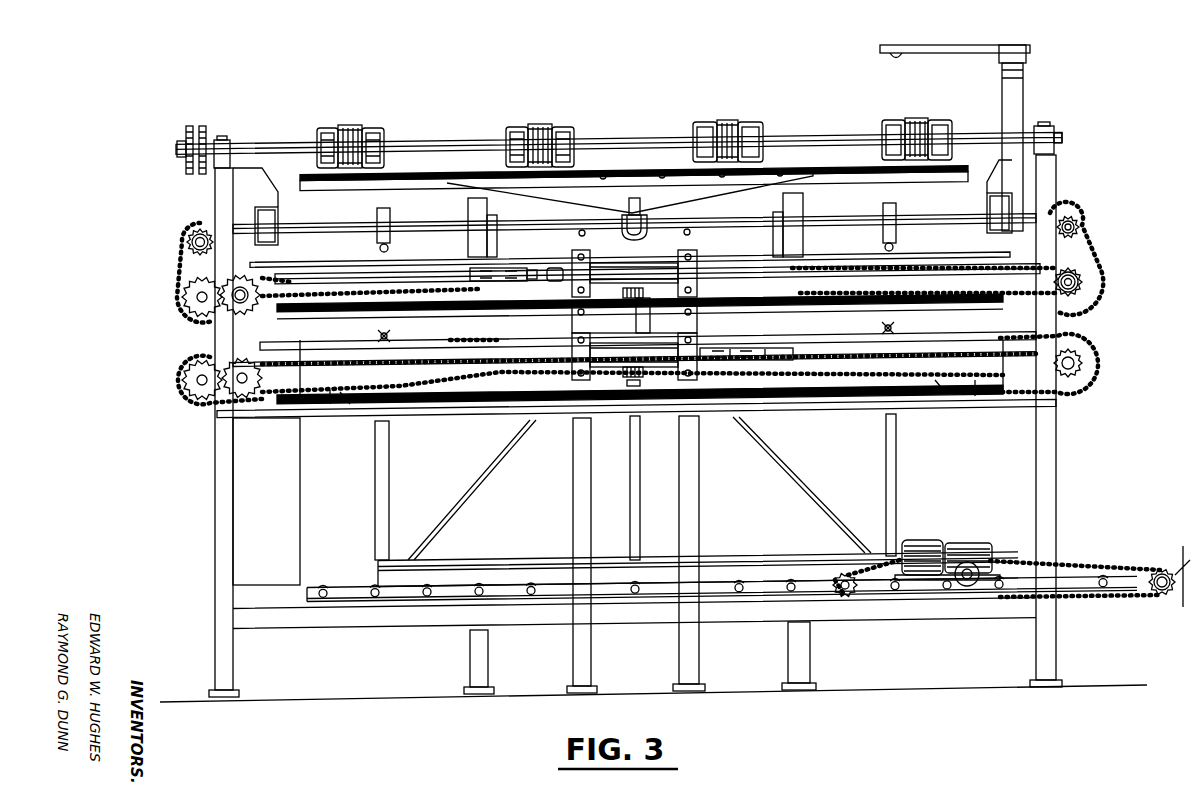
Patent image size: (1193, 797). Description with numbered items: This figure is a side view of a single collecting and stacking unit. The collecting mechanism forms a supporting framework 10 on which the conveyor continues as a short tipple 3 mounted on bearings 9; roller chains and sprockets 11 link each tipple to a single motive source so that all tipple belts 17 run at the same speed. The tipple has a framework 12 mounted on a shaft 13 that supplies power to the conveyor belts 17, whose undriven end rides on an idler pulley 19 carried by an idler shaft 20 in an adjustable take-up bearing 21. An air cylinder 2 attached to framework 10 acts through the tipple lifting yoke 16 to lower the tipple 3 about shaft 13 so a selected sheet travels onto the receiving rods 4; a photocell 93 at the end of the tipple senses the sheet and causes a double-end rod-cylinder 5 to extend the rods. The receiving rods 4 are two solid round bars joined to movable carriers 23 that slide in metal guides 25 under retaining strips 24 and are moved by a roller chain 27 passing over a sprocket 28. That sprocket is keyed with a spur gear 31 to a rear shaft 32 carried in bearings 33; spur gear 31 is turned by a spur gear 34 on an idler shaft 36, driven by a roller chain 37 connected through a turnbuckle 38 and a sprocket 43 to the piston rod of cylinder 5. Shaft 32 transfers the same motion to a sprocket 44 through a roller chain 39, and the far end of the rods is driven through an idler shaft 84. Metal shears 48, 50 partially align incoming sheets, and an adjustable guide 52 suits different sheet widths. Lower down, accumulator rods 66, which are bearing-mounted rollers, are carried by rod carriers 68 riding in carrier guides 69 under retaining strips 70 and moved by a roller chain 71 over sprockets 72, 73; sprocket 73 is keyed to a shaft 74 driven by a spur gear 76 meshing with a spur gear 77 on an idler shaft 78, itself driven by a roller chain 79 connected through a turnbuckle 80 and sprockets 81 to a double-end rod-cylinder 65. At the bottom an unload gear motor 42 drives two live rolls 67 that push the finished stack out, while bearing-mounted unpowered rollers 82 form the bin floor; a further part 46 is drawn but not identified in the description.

The air cylinder 2 is at (627, 336).
The tipple 3 is at (642, 136).
The receiving rods 4 is at (386, 245).
The double-end rod-cylinder 5 is at (644, 272).
The bearings 9 is at (223, 140).
The framework 10 is at (1051, 519).
The roller chains and sprockets 11 is at (203, 126).
The tipple framework 12 is at (367, 131).
The shaft 13 is at (1028, 130).
The tipple lifting yoke 16 is at (643, 193).
The conveyor belts 17 is at (352, 125).
The idler pulley 19 is at (713, 125).
The idler shaft 20 is at (327, 130).
The adjustable take-up bearing 21 is at (375, 148).
The movable carriers 23 is at (389, 215).
The retaining strips 24 is at (432, 245).
The metal guides 25 is at (318, 265).
The roller chain 27 is at (190, 259).
The sprocket 28 is at (178, 293).
The spur gear 31 is at (228, 310).
The rear shaft 32 is at (199, 297).
The bearings 33 is at (195, 281).
The spur gear 34 is at (238, 300).
The idler shaft 36 is at (232, 300).
The roller chain 37 is at (445, 286).
The turnbuckle 38 is at (510, 270).
The roller chain 39 is at (190, 233).
The unload gear motor 42 is at (922, 540).
The sprocket 43 is at (1084, 284).
The sprocket 44 is at (188, 241).
The hub 46 is at (1092, 265).
The metal shear 48 is at (999, 171).
The metal shear 50 is at (289, 512).
The adjustable guide 52 is at (549, 506).
The double-end rod-cylinder 65 is at (650, 350).
The accumulator rods 66 is at (388, 336).
The live rolls 67 is at (845, 598).
The rod carriers 68 is at (380, 356).
The carrier guides 69 is at (340, 372).
The retaining strips 70 is at (300, 341).
The roller chain 71 is at (498, 352).
The roller-chain sprocket 72 is at (496, 377).
The roller chain sprocket 73 is at (180, 392).
The shaft 74 is at (200, 392).
The spur gear 76 is at (210, 396).
The spur gear 77 is at (247, 398).
The idler shaft 78 is at (237, 398).
The roller chain 79 is at (330, 372).
The turnbuckle 80 is at (715, 364).
The roller chain sprockets 81 is at (1085, 376).
The unpowered rollers 82 is at (533, 585).
The idler shaft 84 is at (1069, 227).
The photocell 93 is at (897, 60).